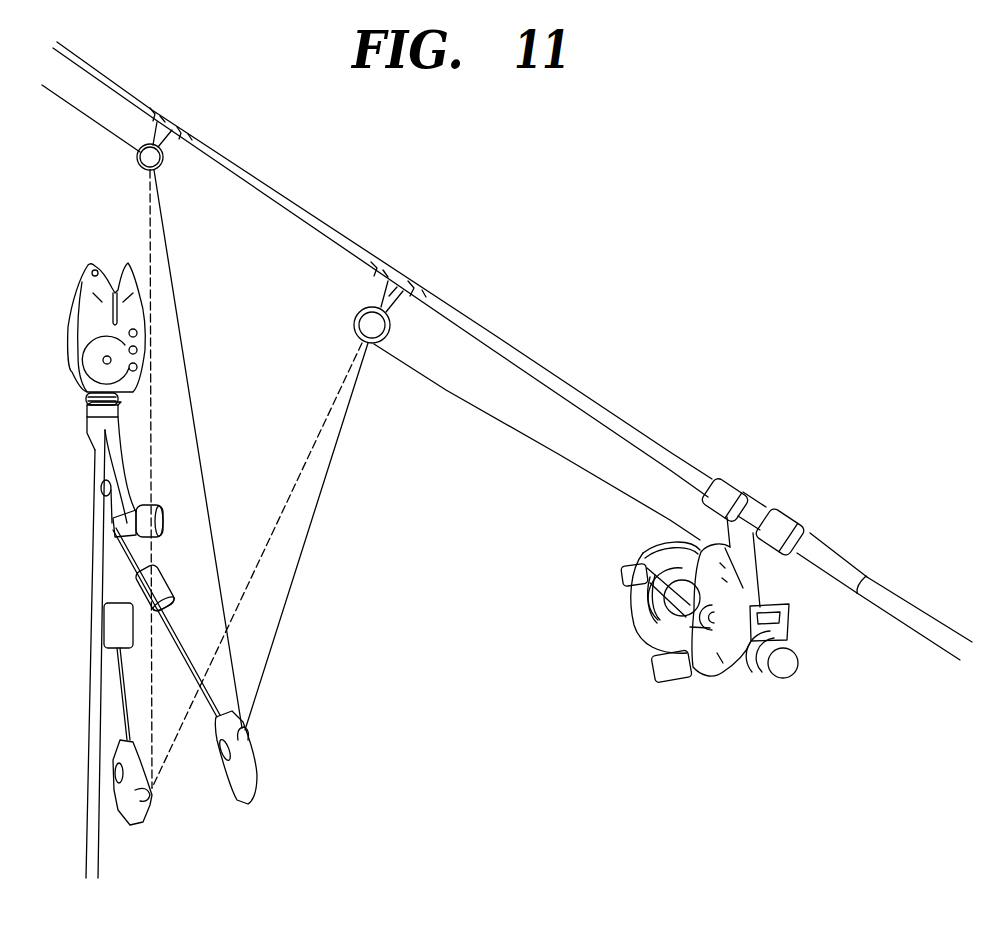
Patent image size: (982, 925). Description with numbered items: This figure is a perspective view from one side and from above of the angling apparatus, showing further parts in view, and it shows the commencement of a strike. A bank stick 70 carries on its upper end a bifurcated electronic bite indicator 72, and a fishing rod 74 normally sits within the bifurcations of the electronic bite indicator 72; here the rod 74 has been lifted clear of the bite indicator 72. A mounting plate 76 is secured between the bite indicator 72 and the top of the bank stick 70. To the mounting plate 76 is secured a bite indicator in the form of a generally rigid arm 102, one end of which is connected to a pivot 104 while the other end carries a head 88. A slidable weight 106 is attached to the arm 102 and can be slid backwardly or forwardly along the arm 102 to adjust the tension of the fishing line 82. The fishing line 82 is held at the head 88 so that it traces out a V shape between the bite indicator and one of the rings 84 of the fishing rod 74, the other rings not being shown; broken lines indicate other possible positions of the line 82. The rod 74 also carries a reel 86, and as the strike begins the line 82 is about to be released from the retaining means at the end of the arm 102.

The bank stick 70 is at (97, 668).
The electronic bite indicator 72 is at (70, 325).
The fishing rod 74 is at (537, 368).
The mounting plate 76 is at (83, 407).
The fishing line 82 is at (292, 583).
The ring 84 is at (371, 347).
The reel 86 is at (635, 628).
The head 88 is at (233, 767).
The rigid arm 102 is at (175, 623).
The pivot 104 is at (133, 505).
The slidable weight 106 is at (162, 583).